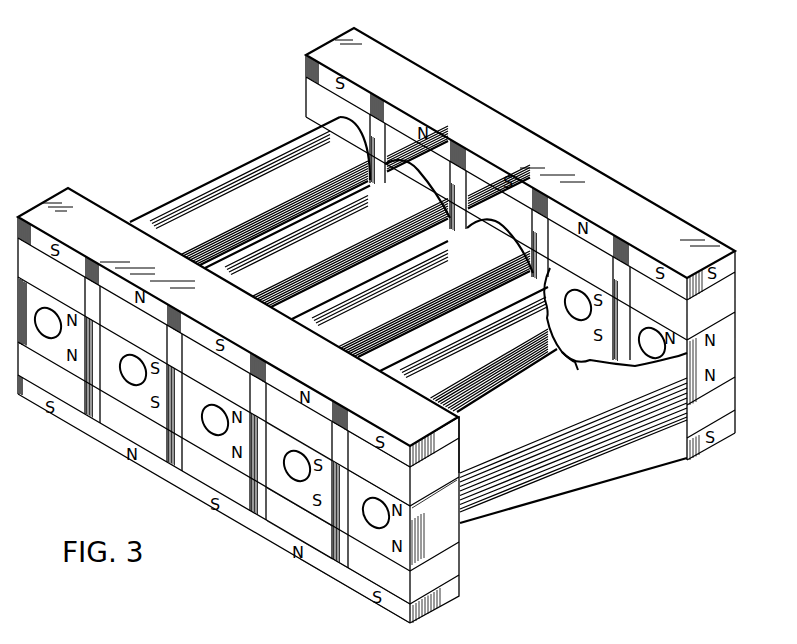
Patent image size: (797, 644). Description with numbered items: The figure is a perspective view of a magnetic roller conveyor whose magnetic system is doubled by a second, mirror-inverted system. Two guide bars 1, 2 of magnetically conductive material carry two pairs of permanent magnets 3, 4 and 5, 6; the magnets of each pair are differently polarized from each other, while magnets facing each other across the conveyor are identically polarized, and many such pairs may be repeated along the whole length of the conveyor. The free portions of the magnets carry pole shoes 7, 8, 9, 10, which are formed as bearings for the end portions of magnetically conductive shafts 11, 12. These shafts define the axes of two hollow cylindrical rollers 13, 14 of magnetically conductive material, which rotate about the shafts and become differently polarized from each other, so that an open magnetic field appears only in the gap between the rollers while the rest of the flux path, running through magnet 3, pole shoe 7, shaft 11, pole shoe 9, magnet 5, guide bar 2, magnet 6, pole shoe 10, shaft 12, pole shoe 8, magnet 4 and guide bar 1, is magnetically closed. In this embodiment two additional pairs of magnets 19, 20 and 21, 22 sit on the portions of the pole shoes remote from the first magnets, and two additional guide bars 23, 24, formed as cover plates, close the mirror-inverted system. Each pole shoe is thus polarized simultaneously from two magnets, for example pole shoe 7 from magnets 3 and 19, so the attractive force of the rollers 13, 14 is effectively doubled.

The guide bar 1 is at (455, 590).
The guide bar 2 is at (718, 439).
The permanent magnet 3 is at (362, 567).
The permanent magnet 4 is at (297, 522).
The permanent magnet 5 is at (722, 408).
The permanent magnet 6 is at (582, 355).
The pole shoe 7 is at (440, 524).
The pole shoe 8 is at (287, 485).
The pole shoe 9 is at (727, 352).
The pole shoe 10 is at (627, 318).
The shaft 11 is at (373, 507).
The shaft 12 is at (298, 462).
The roller 13 is at (582, 445).
The roller 14 is at (486, 322).
The additional magnet 19 is at (360, 453).
The additional magnet 20 is at (277, 415).
The additional magnet 21 is at (672, 307).
The additional magnet 22 is at (600, 258).
The additional guide bar 23 is at (460, 437).
The additional guide bar 24 is at (643, 220).